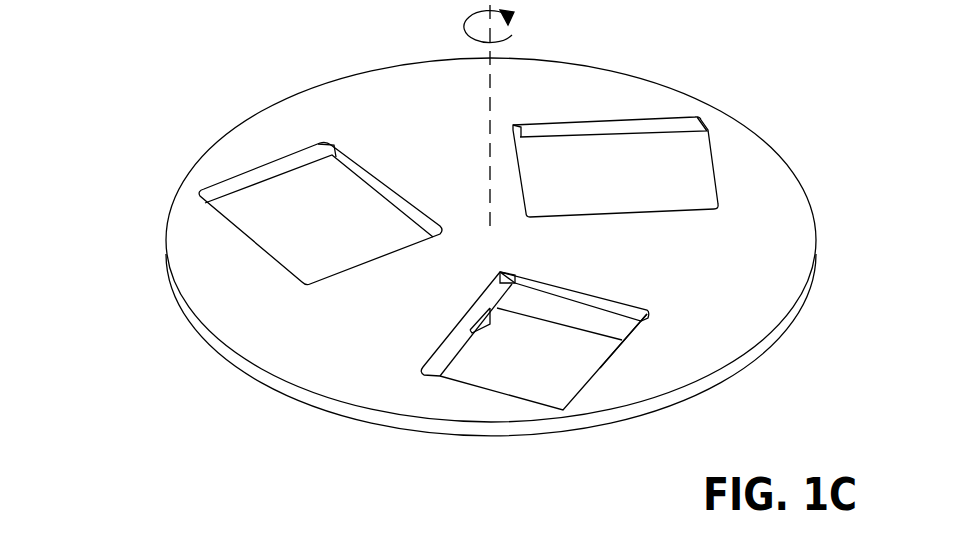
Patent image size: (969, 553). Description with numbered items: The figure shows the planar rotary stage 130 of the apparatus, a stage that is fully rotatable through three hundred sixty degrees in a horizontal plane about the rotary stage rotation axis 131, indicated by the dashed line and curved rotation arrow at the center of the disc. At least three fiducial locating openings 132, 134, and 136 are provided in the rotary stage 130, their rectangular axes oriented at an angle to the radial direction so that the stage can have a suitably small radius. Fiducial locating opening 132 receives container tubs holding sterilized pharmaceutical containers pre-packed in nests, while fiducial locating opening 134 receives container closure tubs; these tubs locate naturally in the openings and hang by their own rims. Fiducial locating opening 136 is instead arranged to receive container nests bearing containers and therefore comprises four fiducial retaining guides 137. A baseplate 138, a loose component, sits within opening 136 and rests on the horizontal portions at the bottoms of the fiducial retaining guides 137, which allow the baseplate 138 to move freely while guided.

The planar rotary stage 130 is at (287, 327).
The rotary stage rotation axis 131 is at (490, 107).
The fiducial locating opening 132 is at (290, 200).
The fiducial locating opening 134 is at (603, 178).
The fiducial locating opening 136 is at (577, 308).
The fiducial retaining guide 137 is at (600, 368).
The baseplate 138 is at (503, 362).